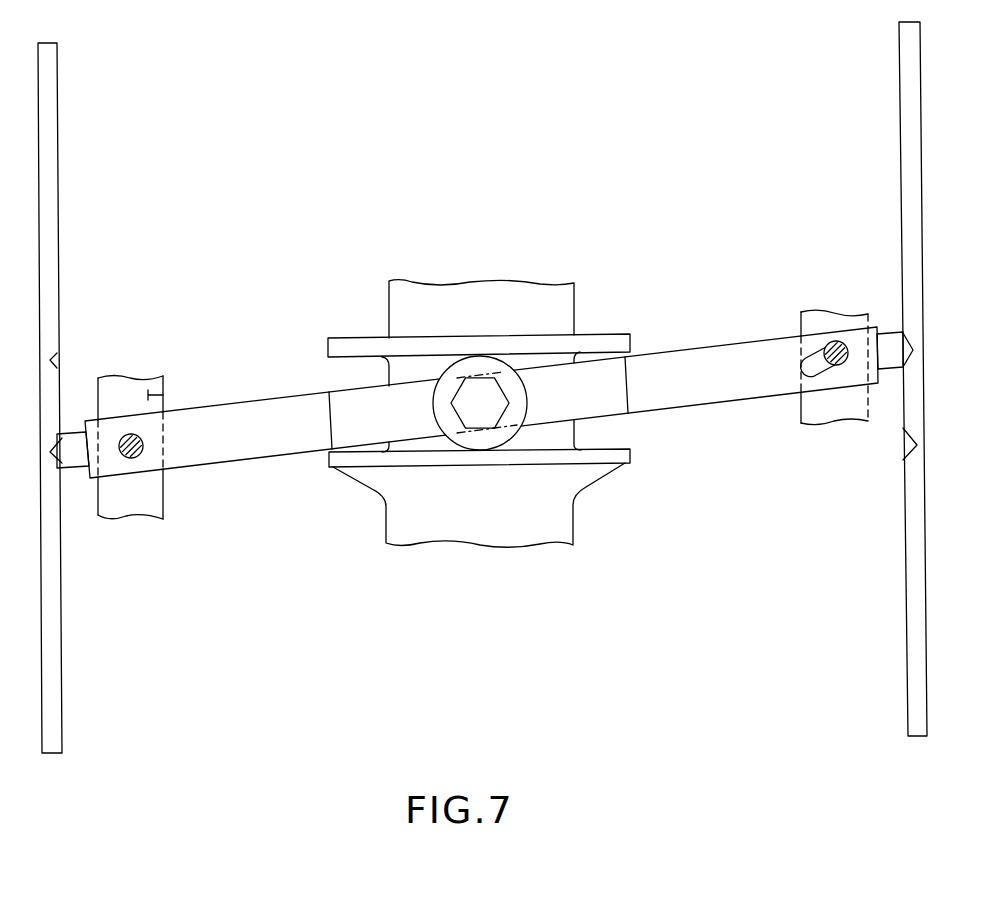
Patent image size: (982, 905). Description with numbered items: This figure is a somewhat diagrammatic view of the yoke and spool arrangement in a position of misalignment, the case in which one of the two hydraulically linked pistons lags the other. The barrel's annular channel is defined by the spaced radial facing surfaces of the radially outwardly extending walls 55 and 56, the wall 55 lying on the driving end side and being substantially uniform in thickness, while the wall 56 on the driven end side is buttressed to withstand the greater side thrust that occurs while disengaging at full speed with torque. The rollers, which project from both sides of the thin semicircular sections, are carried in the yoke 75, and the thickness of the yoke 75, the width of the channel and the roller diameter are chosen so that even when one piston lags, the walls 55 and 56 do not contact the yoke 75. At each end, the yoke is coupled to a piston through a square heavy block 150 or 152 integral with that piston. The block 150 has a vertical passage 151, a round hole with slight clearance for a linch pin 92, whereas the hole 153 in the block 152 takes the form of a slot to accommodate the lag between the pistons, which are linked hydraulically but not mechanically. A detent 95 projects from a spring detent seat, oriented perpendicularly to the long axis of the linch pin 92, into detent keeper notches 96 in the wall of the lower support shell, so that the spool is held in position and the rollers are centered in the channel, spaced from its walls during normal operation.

The wall 55 is at (598, 340).
The wall 56 is at (556, 477).
The yoke 75 is at (657, 345).
The linch pin 92 is at (143, 447).
The detent 95 is at (72, 468).
The detent keeper notches 96 is at (58, 357).
The block 150 is at (163, 388).
The vertical passage 151 is at (130, 434).
The block 152 is at (853, 418).
The hole 153 is at (822, 372).